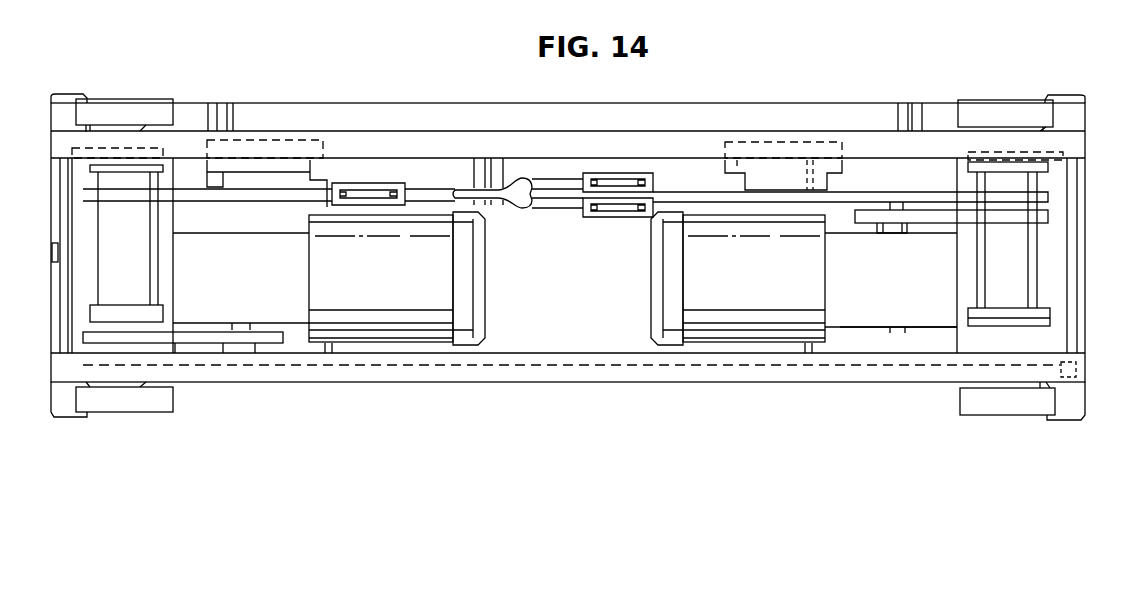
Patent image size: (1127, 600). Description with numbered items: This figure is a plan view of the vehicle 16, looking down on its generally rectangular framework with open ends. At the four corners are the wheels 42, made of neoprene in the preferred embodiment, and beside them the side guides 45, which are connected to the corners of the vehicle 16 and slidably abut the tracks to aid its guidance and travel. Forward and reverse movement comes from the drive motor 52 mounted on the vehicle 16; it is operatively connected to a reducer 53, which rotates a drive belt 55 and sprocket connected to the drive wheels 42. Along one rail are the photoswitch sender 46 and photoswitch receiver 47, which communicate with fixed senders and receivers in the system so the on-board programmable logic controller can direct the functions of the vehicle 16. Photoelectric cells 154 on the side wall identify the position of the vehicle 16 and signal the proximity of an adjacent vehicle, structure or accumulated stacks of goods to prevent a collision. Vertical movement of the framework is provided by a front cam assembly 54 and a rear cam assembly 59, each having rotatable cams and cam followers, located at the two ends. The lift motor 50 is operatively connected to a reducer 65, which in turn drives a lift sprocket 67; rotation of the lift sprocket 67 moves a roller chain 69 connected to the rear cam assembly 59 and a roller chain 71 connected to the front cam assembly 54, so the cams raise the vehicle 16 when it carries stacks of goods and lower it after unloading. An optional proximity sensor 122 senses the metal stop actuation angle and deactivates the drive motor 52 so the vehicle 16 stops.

The vehicle 16 is at (928, 54).
The wheels 42 is at (144, 108).
The side guides 45 is at (63, 97).
The photoswitch sender 46 is at (279, 106).
The photoswitch receiver 47 is at (326, 106).
The lift motor 50 is at (745, 331).
The drive motor 52 is at (388, 324).
The reducer 53 is at (252, 294).
The front cam assembly 54 is at (104, 268).
The drive belt 55 is at (190, 340).
The rear cam assembly 59 is at (1015, 262).
The reducer 65 is at (898, 316).
The lift sprocket 67 is at (893, 226).
The roller chain 69 is at (1038, 220).
The roller chain 71 is at (1040, 192).
The proximity sensor 122 is at (1078, 371).
The photoelectric cells 154 is at (53, 253).